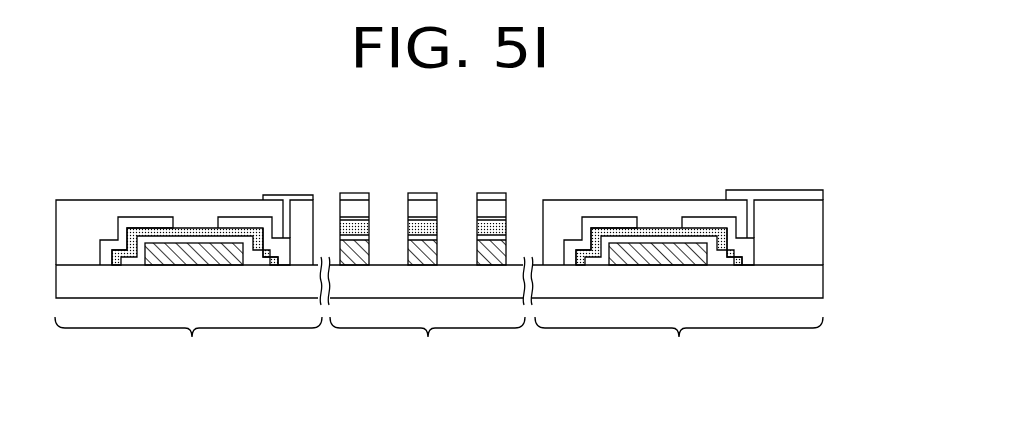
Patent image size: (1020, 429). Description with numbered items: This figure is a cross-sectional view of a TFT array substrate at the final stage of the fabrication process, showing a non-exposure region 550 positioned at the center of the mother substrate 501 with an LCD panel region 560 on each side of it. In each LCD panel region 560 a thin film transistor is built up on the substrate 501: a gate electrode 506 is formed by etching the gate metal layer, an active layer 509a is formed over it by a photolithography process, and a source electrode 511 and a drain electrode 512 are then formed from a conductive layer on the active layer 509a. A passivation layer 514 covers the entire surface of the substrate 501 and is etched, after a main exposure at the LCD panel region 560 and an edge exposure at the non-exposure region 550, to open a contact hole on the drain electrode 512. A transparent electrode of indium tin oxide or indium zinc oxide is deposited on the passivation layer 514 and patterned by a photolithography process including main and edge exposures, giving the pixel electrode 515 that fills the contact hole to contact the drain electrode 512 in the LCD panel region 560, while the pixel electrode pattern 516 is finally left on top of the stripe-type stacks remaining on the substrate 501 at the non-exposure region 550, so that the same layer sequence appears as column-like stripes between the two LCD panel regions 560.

The mother substrate 501 is at (818, 282).
The gate electrode 506 is at (187, 247).
The active layer 509a is at (231, 228).
The source electrode 511 is at (131, 223).
The drain electrode 512 is at (263, 217).
The passivation layer 514 is at (72, 212).
The pixel electrode 515 is at (298, 195).
The pixel electrode pattern 516 is at (362, 193).
The non-exposure region 550 is at (427, 342).
The LCD panel region 560 is at (439, 342).